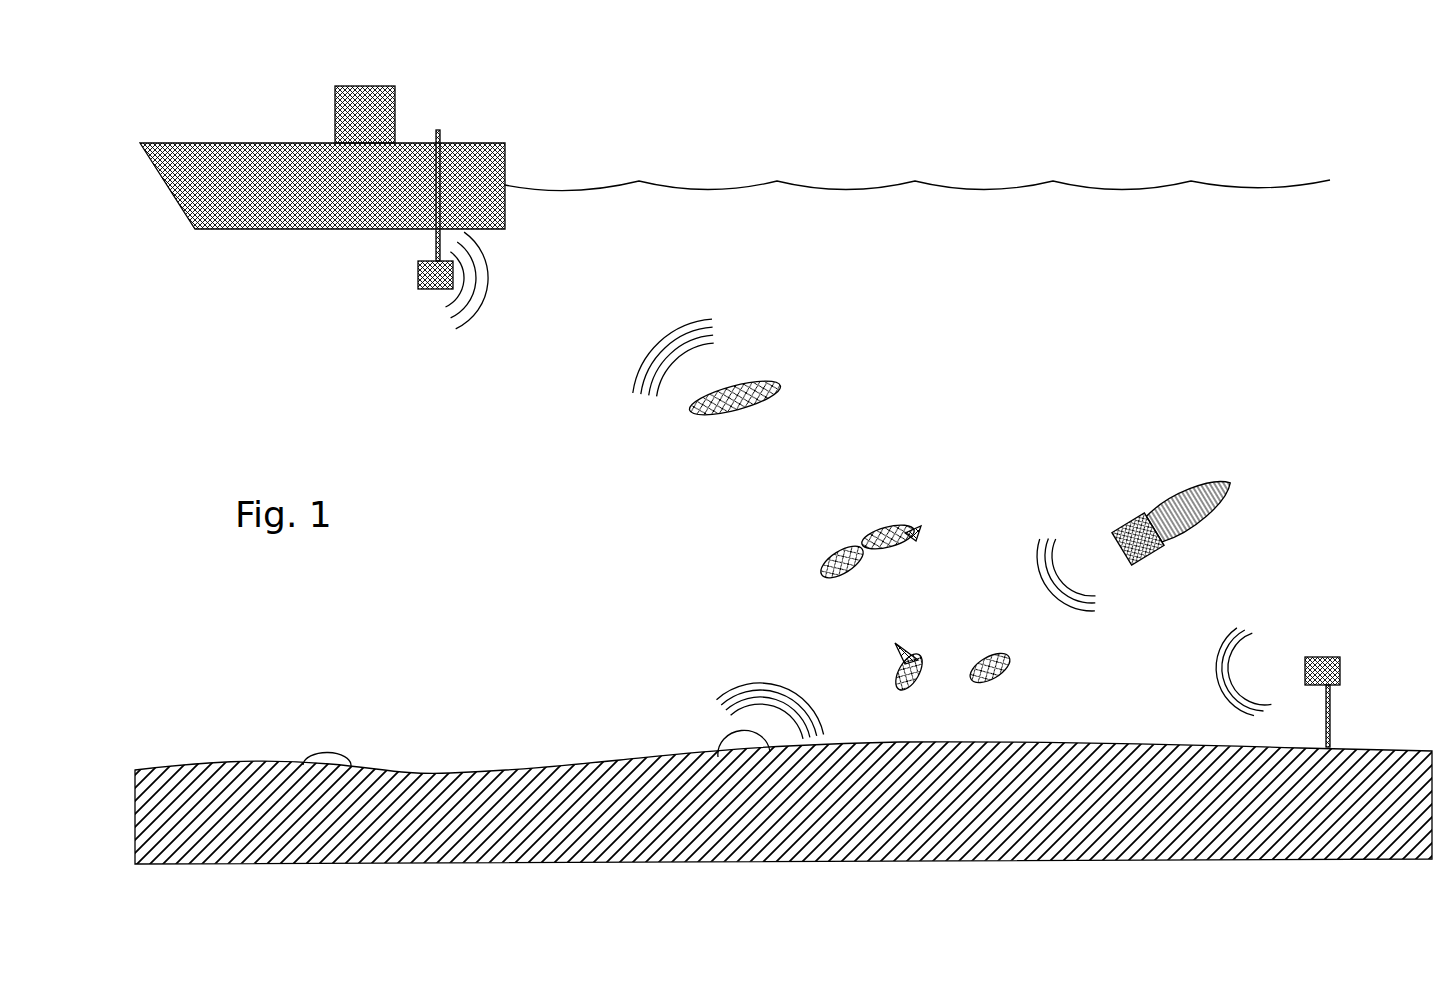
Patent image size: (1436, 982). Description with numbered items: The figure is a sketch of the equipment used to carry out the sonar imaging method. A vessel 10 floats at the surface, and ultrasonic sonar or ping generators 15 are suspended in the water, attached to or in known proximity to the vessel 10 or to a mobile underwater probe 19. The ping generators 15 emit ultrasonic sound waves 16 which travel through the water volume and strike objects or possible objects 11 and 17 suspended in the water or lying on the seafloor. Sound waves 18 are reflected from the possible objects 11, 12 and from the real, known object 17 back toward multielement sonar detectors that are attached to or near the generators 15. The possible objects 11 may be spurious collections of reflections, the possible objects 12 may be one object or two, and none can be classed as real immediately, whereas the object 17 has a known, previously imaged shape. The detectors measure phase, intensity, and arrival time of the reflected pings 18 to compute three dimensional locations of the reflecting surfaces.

The vessel 10 is at (290, 142).
The possible objects 11 is at (753, 385).
The possible objects 12 is at (860, 533).
The ultrasonic sonar generators 15 is at (416, 273).
The ultrasonic sound waves 16 is at (466, 325).
The real objects 17 is at (718, 742).
The reflected sound waves 18 is at (655, 327).
The mobile underwater probe 19 is at (1183, 495).